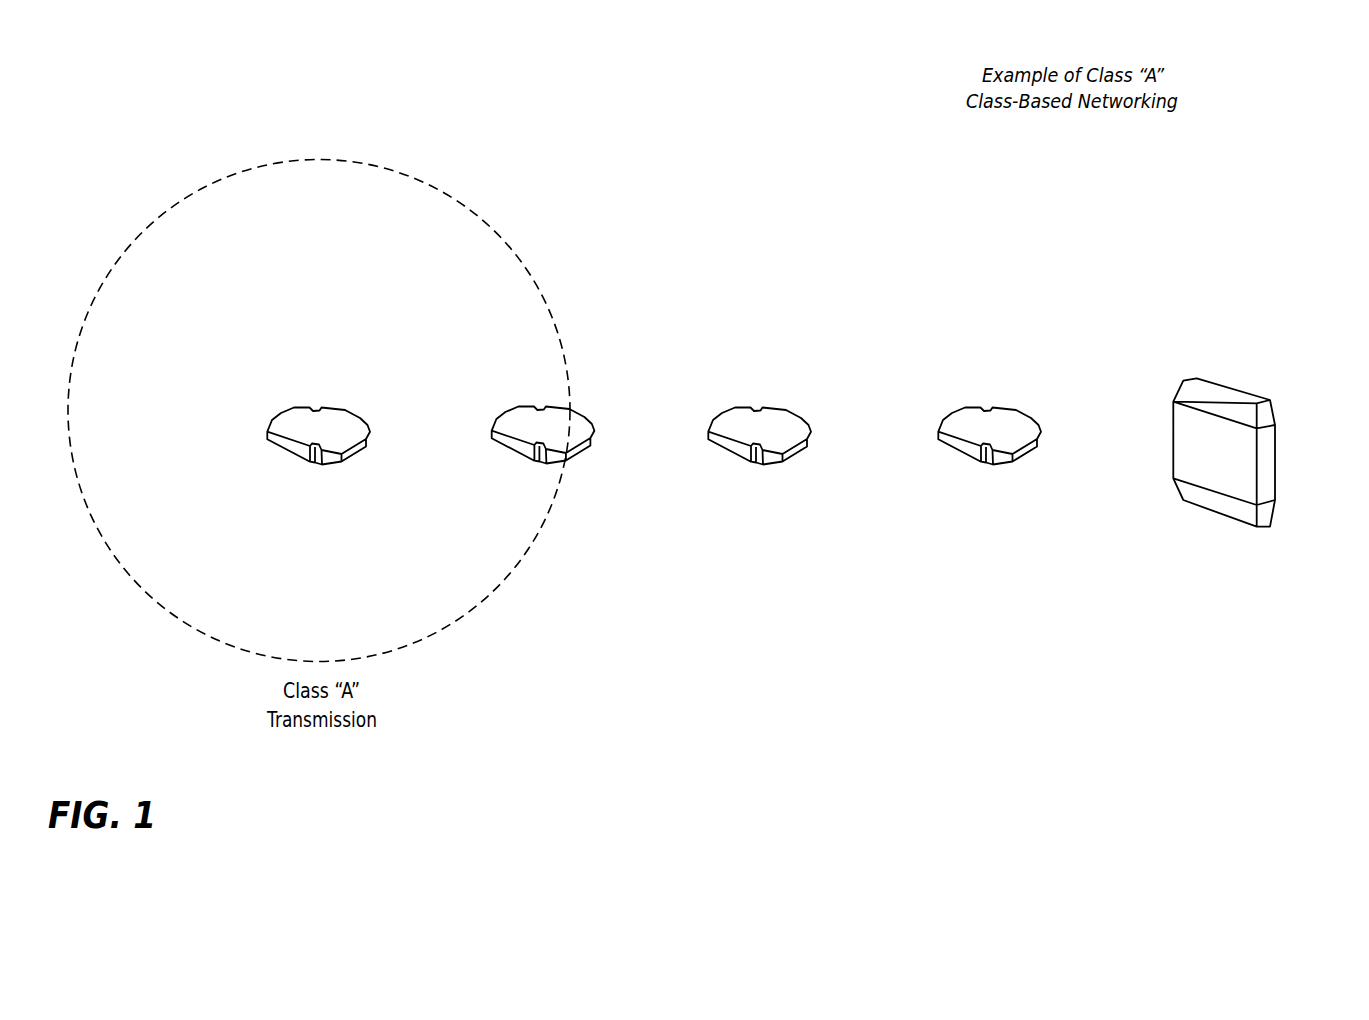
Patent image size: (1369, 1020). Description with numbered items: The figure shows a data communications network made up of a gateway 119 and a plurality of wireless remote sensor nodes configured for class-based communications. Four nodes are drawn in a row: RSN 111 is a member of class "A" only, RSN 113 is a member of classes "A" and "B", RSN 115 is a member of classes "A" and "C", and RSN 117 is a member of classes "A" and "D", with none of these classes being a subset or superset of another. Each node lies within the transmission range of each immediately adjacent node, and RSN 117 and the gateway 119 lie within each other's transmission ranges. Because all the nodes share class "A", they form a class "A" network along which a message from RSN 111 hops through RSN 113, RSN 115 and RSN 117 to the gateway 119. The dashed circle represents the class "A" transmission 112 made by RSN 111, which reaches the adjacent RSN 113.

The remote sensor node 111 is at (355, 462).
The class "A" transmission 112 is at (355, 160).
The remote sensor node 113 is at (579, 461).
The remote sensor node 115 is at (798, 465).
The remote sensor node 117 is at (1029, 462).
The gateway 119 is at (1275, 453).